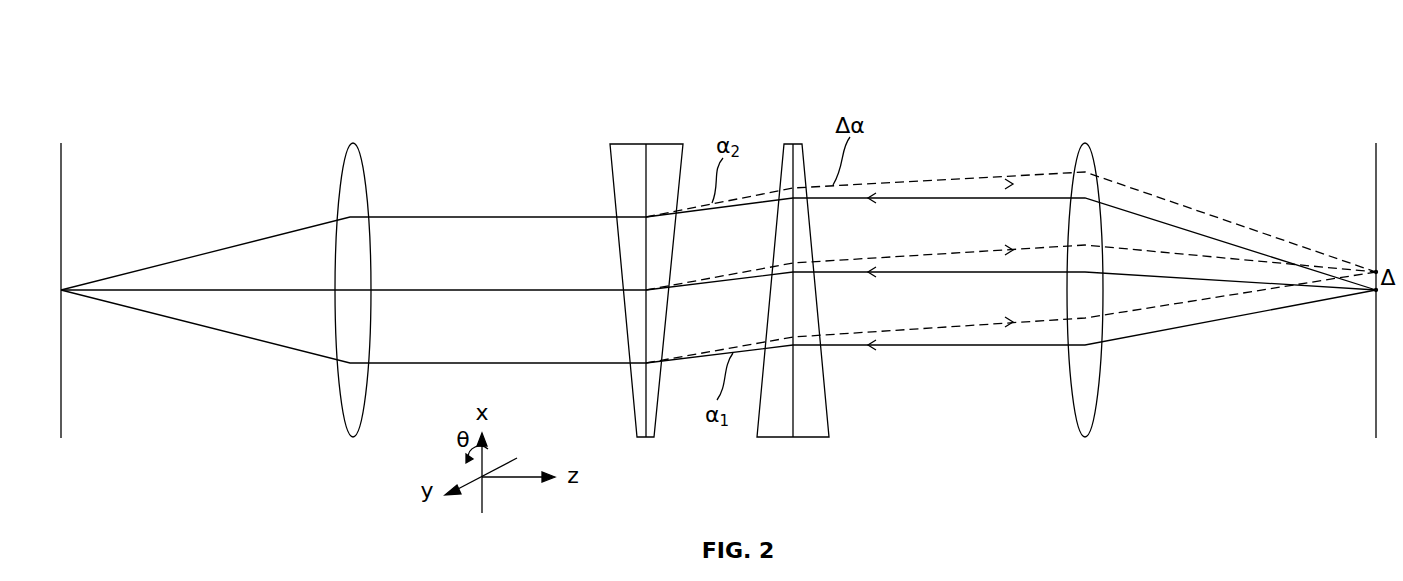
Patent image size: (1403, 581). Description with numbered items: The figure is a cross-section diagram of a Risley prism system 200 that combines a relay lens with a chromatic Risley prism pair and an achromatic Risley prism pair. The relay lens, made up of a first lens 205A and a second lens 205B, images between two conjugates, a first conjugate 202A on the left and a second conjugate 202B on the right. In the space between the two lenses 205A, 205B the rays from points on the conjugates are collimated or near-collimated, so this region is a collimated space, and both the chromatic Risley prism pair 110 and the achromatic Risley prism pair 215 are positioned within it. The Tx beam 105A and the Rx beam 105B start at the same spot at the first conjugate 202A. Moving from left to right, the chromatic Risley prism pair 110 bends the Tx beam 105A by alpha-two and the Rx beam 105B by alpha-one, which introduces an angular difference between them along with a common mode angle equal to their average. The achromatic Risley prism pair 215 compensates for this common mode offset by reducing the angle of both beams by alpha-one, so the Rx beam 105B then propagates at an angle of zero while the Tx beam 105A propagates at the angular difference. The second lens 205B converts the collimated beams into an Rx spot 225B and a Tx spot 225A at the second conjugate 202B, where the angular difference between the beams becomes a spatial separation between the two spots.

The Risley prism system 200 is at (612, 46).
The conjugate 202A is at (59, 275).
The relay lens 205A is at (352, 275).
The chromatic Risley prism pair 110 is at (646, 275).
The achromatic Risley prism pair 215 is at (793, 275).
The Tx beam 105A is at (1011, 236).
The Rx beam 105B is at (718, 303).
The relay lens 205B is at (1086, 275).
The conjugate 202B is at (1375, 275).
The Tx spot 225A is at (1372, 262).
The Rx spot 225B is at (1372, 298).